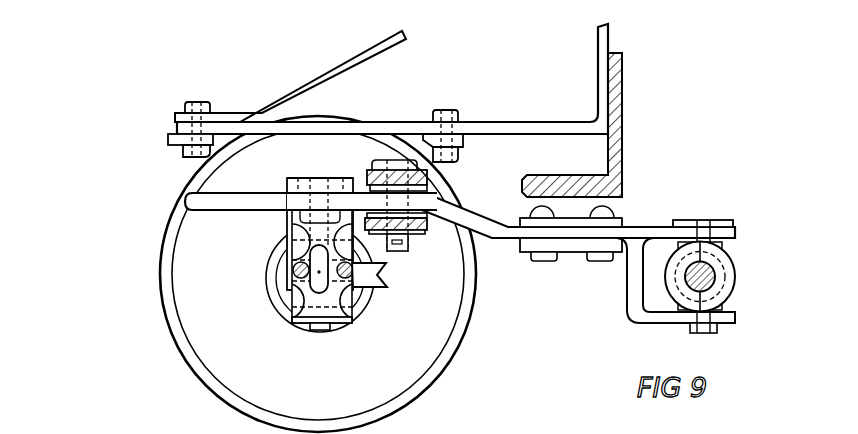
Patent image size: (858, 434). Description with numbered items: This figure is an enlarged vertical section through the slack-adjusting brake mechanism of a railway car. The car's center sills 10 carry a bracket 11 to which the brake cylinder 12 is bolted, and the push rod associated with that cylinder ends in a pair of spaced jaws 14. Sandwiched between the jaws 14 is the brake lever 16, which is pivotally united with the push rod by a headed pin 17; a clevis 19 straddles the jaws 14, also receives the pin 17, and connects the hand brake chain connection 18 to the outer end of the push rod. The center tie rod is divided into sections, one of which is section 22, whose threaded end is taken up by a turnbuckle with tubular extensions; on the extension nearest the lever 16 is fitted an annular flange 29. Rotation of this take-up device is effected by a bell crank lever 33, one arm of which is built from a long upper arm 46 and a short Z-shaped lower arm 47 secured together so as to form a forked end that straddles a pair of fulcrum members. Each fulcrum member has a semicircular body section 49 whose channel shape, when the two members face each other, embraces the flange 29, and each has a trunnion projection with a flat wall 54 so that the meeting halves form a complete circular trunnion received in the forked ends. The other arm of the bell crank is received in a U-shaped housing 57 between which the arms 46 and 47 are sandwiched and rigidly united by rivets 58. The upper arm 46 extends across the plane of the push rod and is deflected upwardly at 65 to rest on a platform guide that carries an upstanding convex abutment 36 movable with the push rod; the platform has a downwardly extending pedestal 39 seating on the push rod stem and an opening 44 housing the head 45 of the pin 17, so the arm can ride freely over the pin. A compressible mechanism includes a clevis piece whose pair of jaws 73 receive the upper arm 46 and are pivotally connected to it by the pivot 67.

The center sill 10 is at (623, 183).
The bracket 11 is at (176, 121).
The brake cylinder 12 is at (203, 320).
The jaws 14 is at (297, 250).
The brake lever 16 is at (362, 280).
The headed pin 17 is at (314, 331).
The hand brake chain connection 18 is at (294, 267).
The clevis 19 is at (350, 313).
The tie rod section 22 is at (740, 287).
The annular flange 29 is at (653, 305).
The bell crank lever 33 is at (507, 232).
The abutment 36 is at (289, 182).
The pedestal 39 is at (297, 283).
The opening 44 is at (298, 215).
The head 45 is at (390, 169).
The upper arm 46 is at (220, 203).
The lower arm 47 is at (733, 317).
The body section 49 is at (736, 268).
The flat wall 54 is at (695, 222).
The U-shaped housing 57 is at (623, 223).
The rivets 58 is at (600, 260).
The upward deflection 65 is at (480, 213).
The pivot 67 is at (405, 254).
The clevis jaws 73 is at (430, 178).